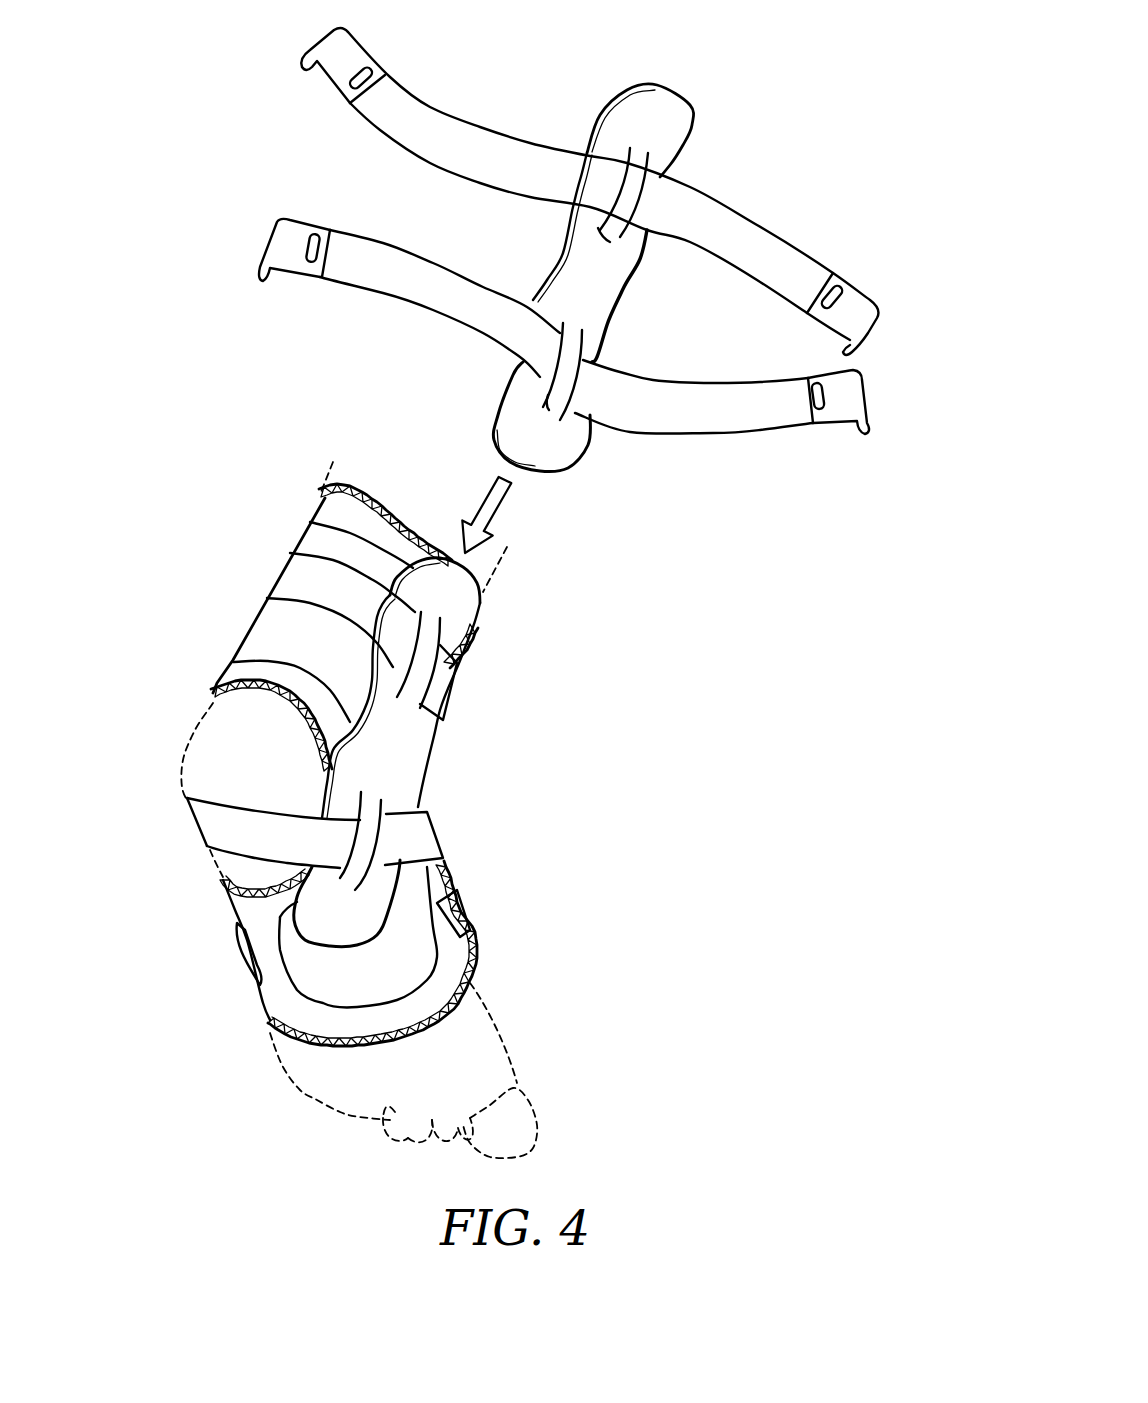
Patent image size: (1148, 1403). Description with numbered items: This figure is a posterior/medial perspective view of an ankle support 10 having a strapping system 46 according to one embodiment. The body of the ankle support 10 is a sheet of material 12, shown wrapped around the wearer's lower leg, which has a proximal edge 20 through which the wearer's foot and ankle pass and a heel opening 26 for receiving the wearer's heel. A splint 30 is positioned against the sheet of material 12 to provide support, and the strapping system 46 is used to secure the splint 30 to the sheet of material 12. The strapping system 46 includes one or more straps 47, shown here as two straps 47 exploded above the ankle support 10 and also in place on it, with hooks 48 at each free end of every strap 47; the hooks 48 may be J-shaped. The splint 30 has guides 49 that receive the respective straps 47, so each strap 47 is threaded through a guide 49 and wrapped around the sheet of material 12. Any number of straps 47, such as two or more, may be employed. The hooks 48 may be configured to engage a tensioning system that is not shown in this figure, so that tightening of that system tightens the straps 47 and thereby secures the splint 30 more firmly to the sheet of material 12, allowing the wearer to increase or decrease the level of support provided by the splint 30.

The ankle support 10 is at (197, 635).
The sheet of material 12 is at (290, 647).
The proximal edge 20 is at (387, 508).
The heel opening 26 is at (260, 693).
The splint 30 is at (607, 260).
The strapping system 46 is at (393, 193).
The strap 47 is at (487, 162).
The hook 48 is at (323, 53).
The guide 49 is at (633, 192).